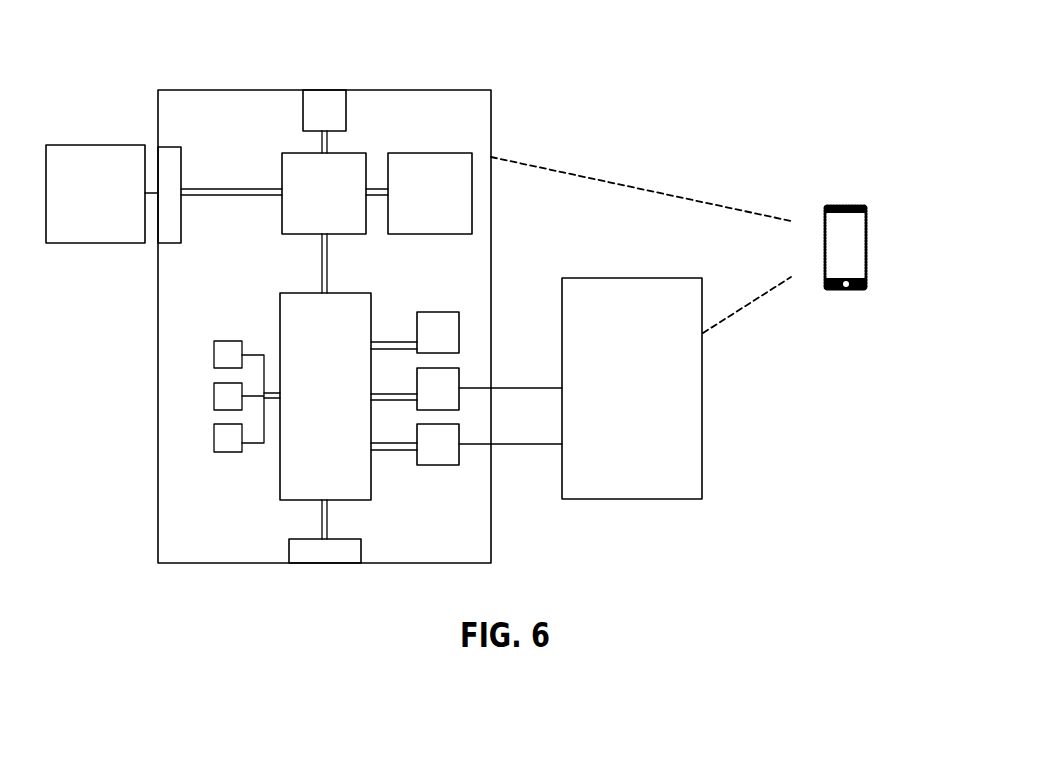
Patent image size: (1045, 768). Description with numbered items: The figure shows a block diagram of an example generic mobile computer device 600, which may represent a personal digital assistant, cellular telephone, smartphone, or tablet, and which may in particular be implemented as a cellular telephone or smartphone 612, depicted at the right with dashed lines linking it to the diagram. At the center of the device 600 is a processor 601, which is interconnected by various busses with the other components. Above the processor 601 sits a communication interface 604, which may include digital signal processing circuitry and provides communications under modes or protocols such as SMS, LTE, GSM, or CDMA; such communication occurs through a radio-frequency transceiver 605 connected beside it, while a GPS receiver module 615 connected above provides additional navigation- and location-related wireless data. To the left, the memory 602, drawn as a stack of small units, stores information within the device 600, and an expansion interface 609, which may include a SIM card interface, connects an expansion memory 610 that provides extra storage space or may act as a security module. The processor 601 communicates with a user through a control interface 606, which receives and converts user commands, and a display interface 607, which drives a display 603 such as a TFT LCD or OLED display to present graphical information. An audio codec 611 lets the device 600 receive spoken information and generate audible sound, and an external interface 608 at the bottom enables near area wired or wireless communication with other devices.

The mobile computer device 600 is at (705, 103).
The processor 601 is at (282, 304).
The memory 602 is at (210, 395).
The display 603 is at (692, 500).
The communication interface 604 is at (282, 172).
The transceiver 605 is at (453, 148).
The control interface 606 is at (460, 380).
The display interface 607 is at (448, 467).
The external interface 608 is at (328, 547).
The expansion interface 609 is at (161, 146).
The expansion memory 610 is at (73, 143).
The audio codec 611 is at (460, 313).
The smartphone 612 is at (865, 205).
The GPS receiver module 615 is at (347, 98).